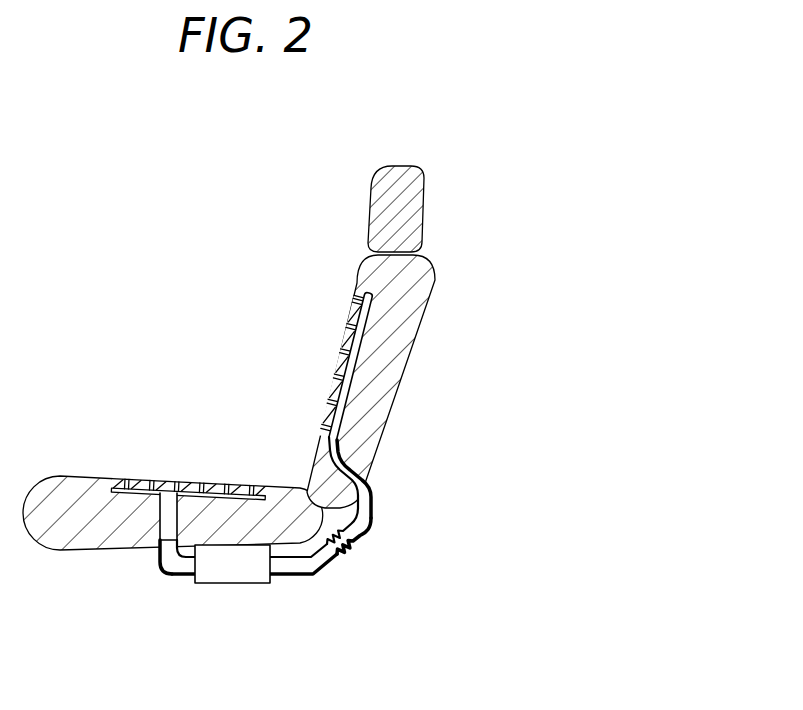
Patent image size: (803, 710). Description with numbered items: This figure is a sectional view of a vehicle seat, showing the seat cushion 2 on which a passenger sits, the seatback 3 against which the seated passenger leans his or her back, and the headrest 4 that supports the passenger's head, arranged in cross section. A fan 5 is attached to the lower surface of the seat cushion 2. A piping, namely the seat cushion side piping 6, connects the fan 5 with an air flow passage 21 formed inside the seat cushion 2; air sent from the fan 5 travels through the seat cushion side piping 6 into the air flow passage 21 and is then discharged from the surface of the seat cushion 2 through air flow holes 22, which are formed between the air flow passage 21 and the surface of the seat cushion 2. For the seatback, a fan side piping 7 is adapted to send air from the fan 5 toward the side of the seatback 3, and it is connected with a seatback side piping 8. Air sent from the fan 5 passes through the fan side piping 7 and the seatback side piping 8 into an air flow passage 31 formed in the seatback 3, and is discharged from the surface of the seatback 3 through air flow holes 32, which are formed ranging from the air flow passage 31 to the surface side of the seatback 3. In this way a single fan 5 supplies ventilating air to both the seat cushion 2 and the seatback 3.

The seat cushion 2 is at (68, 497).
The seatback 3 is at (402, 324).
The headrest 4 is at (413, 209).
The fan 5 is at (232, 576).
The piping (seat cushion side piping) 6 is at (173, 574).
The piping (fan side piping) 7 is at (302, 575).
The piping (seatback side piping) 8 is at (372, 502).
The air flow passage 21 is at (165, 517).
The air flow holes 22 is at (152, 482).
The air flow passage 31 is at (337, 464).
The air flow holes 32 is at (333, 405).